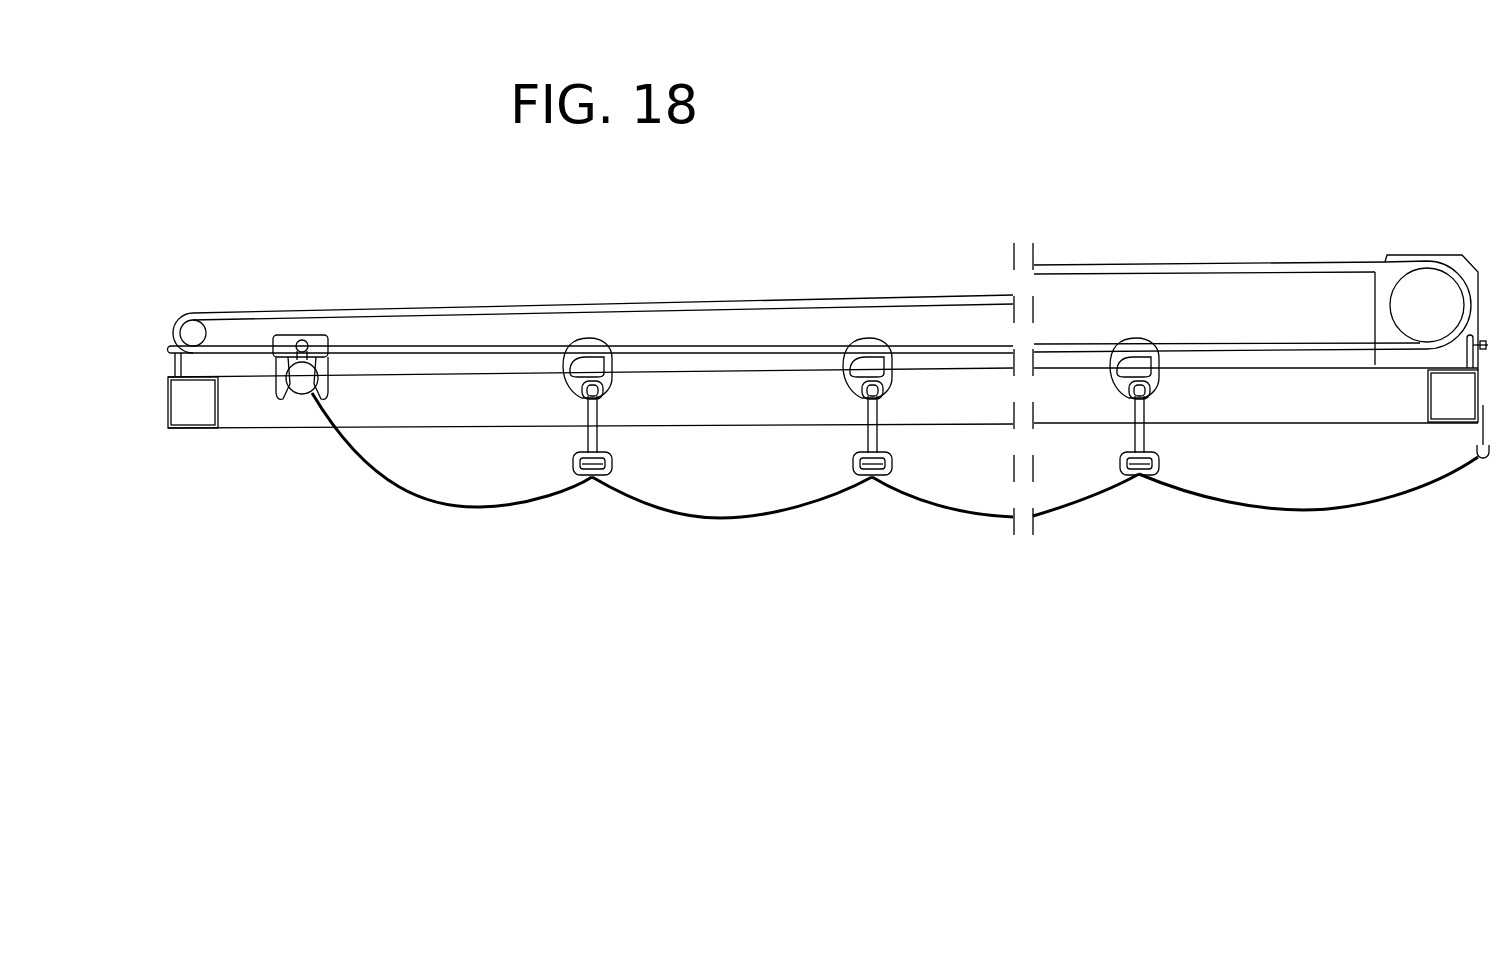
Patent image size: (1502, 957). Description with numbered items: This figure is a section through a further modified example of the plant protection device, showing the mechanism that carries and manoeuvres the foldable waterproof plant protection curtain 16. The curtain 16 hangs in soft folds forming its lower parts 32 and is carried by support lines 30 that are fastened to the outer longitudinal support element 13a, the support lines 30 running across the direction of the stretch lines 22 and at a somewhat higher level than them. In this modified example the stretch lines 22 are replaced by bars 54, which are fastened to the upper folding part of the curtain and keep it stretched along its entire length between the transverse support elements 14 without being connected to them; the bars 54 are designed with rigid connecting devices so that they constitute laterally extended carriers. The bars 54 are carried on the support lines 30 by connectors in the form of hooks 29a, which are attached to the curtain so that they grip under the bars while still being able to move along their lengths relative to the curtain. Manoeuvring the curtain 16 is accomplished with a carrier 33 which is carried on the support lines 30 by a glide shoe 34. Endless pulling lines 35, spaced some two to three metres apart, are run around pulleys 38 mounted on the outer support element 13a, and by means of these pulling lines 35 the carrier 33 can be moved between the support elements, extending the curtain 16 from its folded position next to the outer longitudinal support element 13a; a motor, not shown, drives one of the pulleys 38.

The outer longitudinal support element 13a is at (192, 408).
The transverse support element 14 is at (238, 417).
The plant protection curtain 16 is at (463, 508).
The stretch lines 22 is at (592, 477).
The hooks 29a is at (585, 340).
The support lines 30 is at (797, 347).
The lower parts 32 is at (1425, 295).
The carrier 33 is at (303, 376).
The glide shoe 34 is at (287, 340).
The endless pulling lines 35 is at (690, 298).
The pulleys 38 is at (192, 330).
The bars 54 is at (588, 436).